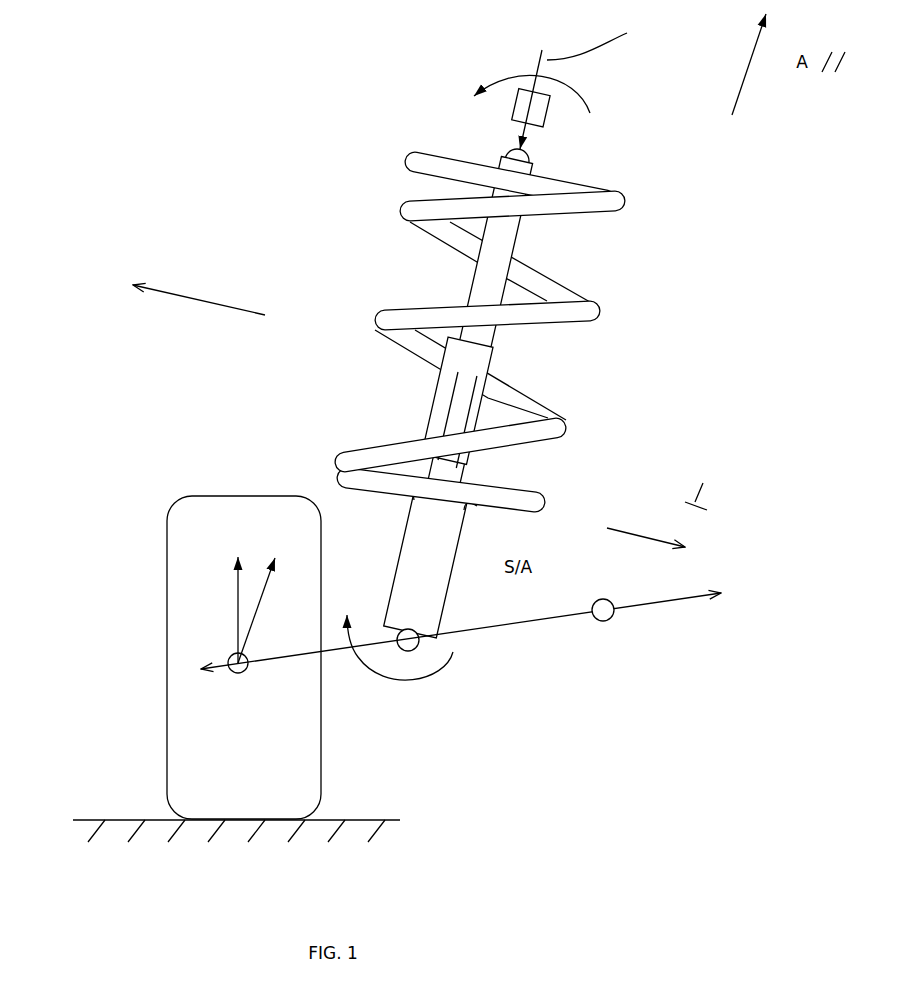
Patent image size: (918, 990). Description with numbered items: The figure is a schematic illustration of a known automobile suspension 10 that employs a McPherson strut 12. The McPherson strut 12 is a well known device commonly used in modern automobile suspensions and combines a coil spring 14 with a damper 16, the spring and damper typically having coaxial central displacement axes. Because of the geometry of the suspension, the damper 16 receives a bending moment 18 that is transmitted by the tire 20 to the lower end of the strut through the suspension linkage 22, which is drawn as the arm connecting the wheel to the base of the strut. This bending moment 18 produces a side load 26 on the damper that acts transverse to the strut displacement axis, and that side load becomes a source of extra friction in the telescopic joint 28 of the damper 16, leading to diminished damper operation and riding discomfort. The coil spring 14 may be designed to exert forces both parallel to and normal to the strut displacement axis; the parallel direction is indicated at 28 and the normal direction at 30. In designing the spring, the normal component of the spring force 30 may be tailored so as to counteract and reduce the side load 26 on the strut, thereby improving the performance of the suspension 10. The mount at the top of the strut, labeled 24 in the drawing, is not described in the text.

The automobile suspension 10 is at (238, 90).
The McPherson strut 12 is at (602, 186).
The coil spring 14 is at (568, 422).
The damper 16 is at (476, 277).
The bending moment 18 is at (567, 82).
The tire 20 is at (188, 752).
The suspension linkage 22 is at (510, 627).
The upper strut mount 24 is at (547, 120).
The side load 26 is at (200, 300).
The telescopic joint 28 is at (437, 387).
The normal component of the spring force 30 is at (675, 514).